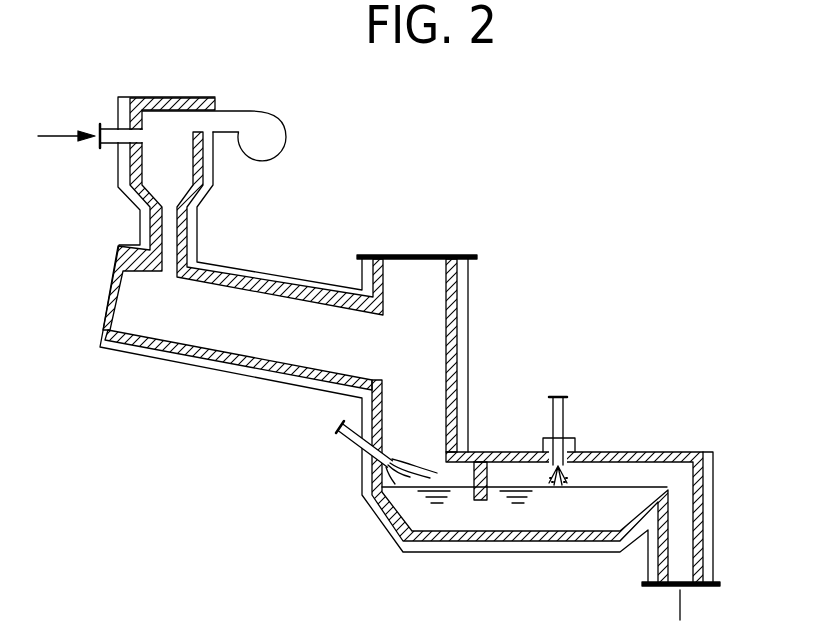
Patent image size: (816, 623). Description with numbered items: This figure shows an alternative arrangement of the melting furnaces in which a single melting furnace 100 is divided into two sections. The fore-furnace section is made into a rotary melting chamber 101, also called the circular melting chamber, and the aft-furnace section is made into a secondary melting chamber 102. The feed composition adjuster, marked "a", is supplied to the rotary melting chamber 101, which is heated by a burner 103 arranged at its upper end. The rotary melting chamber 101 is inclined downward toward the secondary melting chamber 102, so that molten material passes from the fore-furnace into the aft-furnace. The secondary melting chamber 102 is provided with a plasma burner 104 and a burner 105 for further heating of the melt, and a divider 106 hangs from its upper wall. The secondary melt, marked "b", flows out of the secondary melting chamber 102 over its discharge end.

The melting furnace 100 is at (490, 239).
The rotary melting chamber 101 is at (298, 308).
The secondary melting chamber 102 is at (618, 475).
The burner 103 is at (276, 123).
The plasma burner 104 is at (565, 418).
The burner 105 is at (347, 448).
The divider 106 is at (512, 448).